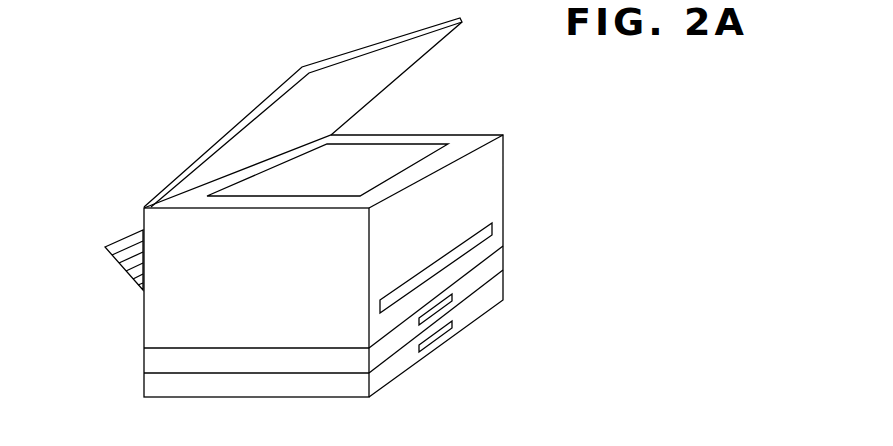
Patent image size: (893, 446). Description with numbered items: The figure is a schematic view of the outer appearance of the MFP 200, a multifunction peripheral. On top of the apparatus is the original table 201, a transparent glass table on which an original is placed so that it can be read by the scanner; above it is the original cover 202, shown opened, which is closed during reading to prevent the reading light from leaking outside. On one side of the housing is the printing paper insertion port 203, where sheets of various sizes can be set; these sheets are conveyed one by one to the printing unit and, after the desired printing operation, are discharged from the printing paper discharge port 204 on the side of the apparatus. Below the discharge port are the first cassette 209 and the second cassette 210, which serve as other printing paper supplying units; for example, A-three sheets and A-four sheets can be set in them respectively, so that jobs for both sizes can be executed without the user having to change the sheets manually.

The MFP 200 is at (158, 84).
The original table 201 is at (384, 152).
The original cover 202 is at (290, 75).
The printing paper insertion port 203 is at (113, 243).
The printing paper discharge port 204 is at (492, 227).
The first cassette 209 is at (498, 263).
The second cassette 210 is at (498, 299).